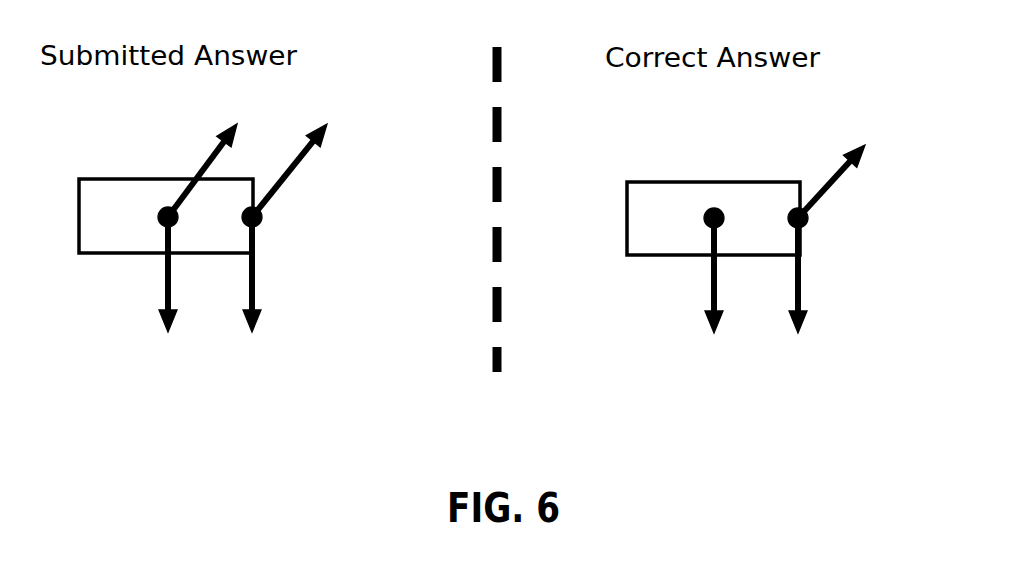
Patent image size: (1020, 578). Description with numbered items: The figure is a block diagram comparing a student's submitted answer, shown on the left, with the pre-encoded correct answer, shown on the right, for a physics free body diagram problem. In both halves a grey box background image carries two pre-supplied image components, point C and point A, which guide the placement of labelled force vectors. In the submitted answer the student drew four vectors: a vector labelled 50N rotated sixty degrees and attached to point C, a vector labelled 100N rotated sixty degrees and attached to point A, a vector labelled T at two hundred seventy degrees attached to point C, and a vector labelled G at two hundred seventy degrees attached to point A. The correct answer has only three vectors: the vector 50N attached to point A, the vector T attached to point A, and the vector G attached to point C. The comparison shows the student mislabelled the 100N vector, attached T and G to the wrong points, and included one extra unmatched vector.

The force vector labelled 50N is at (527, 153).
The force vector labelled 100N is at (311, 153).
The force vector labelled T is at (471, 281).
The force vector labelled G is at (474, 281).
The point C is at (428, 211).
The point A is at (514, 211).